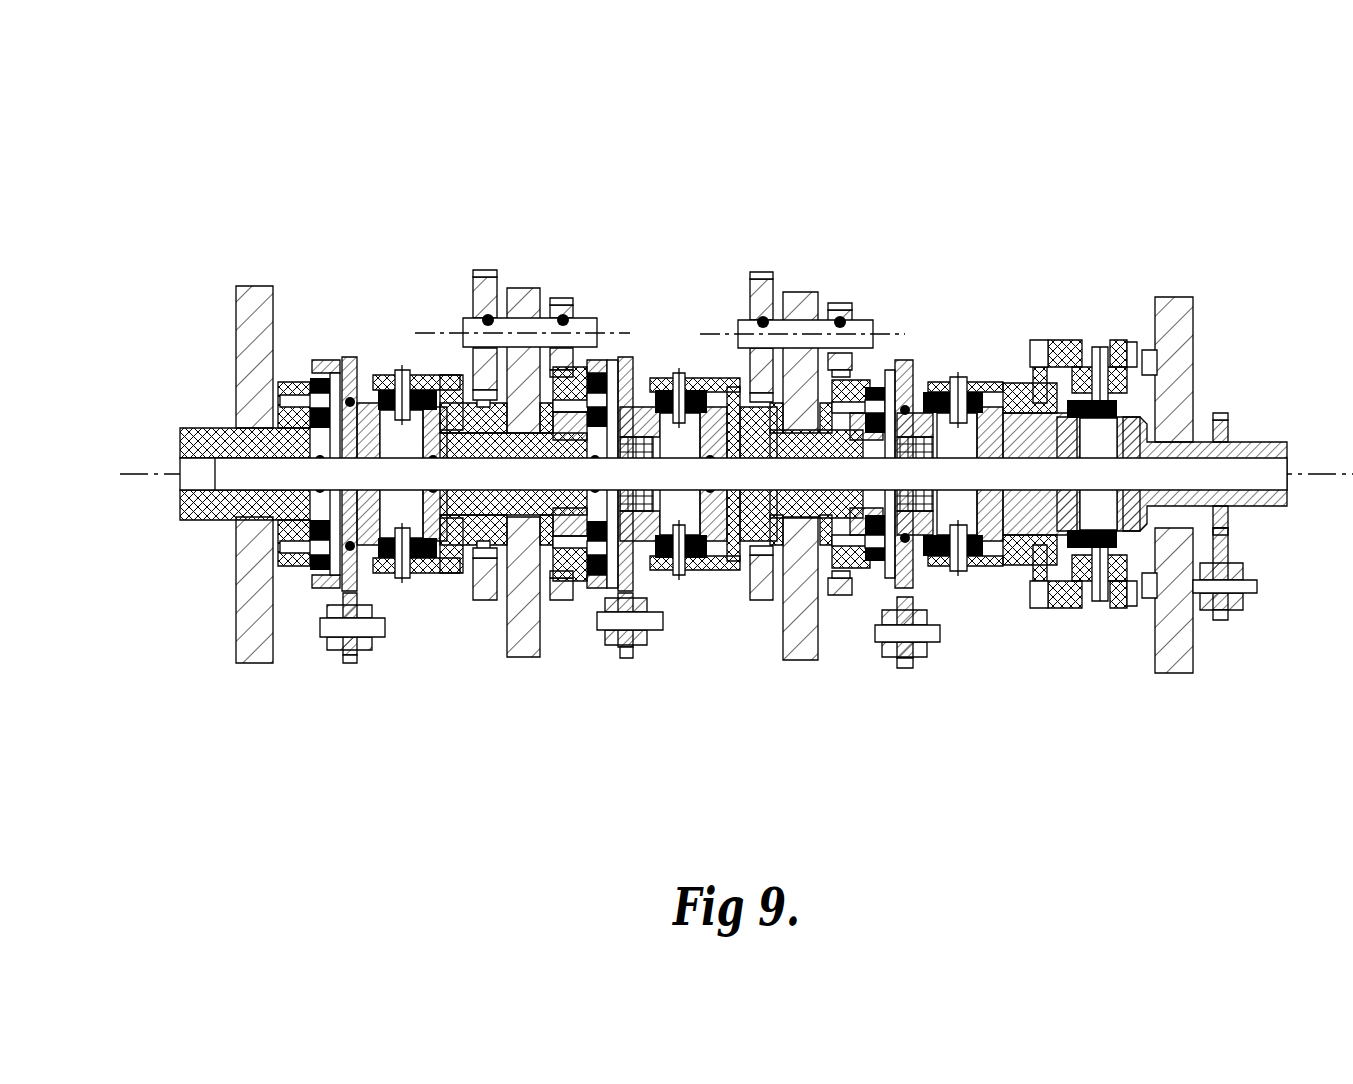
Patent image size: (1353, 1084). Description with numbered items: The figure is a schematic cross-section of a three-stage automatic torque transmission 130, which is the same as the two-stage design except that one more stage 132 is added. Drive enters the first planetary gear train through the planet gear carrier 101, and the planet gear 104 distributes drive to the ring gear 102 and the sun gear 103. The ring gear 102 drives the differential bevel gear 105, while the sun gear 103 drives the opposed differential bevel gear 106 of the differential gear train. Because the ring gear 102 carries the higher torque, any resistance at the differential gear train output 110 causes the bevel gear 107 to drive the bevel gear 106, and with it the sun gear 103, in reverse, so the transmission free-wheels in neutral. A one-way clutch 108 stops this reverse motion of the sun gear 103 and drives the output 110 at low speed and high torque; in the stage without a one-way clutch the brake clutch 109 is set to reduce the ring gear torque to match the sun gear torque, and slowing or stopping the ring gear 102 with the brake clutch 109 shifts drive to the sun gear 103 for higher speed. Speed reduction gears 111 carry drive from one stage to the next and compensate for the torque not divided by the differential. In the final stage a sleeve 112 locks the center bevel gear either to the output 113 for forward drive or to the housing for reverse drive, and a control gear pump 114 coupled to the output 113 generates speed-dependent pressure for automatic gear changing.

The planet gear carrier 101 is at (208, 427).
The ring gear 102 is at (337, 367).
The sun gear 103 is at (320, 498).
The planet gear 104 is at (310, 568).
The differential bevel gear 105 is at (380, 387).
The opposed differential bevel gear 106 is at (438, 550).
The bevel gear 107 is at (423, 377).
The one-way clutch 108 is at (660, 582).
The brake clutch 109 is at (342, 653).
The differential gear train output 110 is at (585, 335).
The speed reduction gears 111 is at (495, 288).
The sleeve 112 is at (1077, 345).
The output 113 is at (1243, 453).
The gear pump 114 is at (1225, 620).
The transmission 130 is at (268, 248).
The stage 132 is at (918, 340).